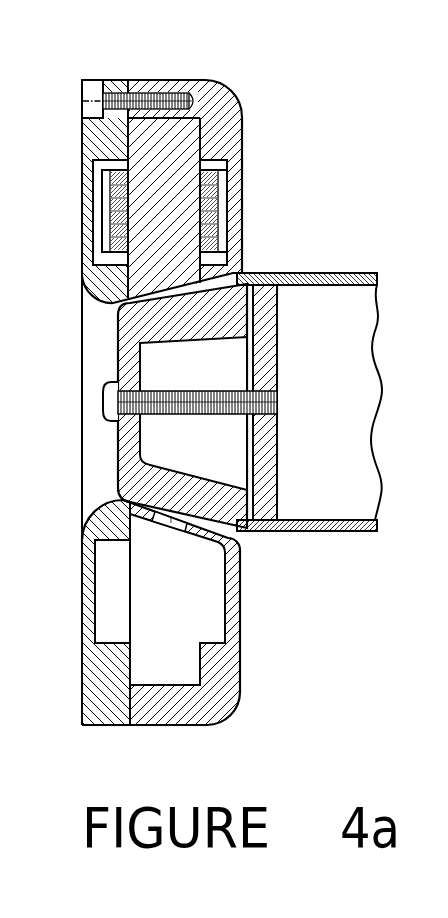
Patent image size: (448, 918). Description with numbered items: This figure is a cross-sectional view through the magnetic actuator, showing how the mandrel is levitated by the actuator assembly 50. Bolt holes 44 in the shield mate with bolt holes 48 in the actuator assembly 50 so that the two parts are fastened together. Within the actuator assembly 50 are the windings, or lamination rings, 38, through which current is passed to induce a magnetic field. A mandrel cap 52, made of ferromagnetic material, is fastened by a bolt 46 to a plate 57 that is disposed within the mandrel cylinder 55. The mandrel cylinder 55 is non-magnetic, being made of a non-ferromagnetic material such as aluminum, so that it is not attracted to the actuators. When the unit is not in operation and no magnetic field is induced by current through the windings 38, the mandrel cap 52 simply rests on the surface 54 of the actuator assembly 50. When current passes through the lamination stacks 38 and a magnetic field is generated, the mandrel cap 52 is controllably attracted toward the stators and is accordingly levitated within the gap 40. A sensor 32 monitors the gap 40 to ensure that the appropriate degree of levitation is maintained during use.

The sensor 32 is at (170, 524).
The windings (lamination rings) 38 is at (215, 190).
The gap 40 is at (236, 272).
The bolt holes 44 is at (96, 90).
The bolt 46 is at (107, 407).
The bolt holes 48 is at (158, 94).
The actuator assembly 50 is at (226, 683).
The mandrel cap 52 is at (123, 363).
The surface 54 is at (215, 508).
The mandrel cylinder 55 is at (338, 278).
The plate 57 is at (265, 353).